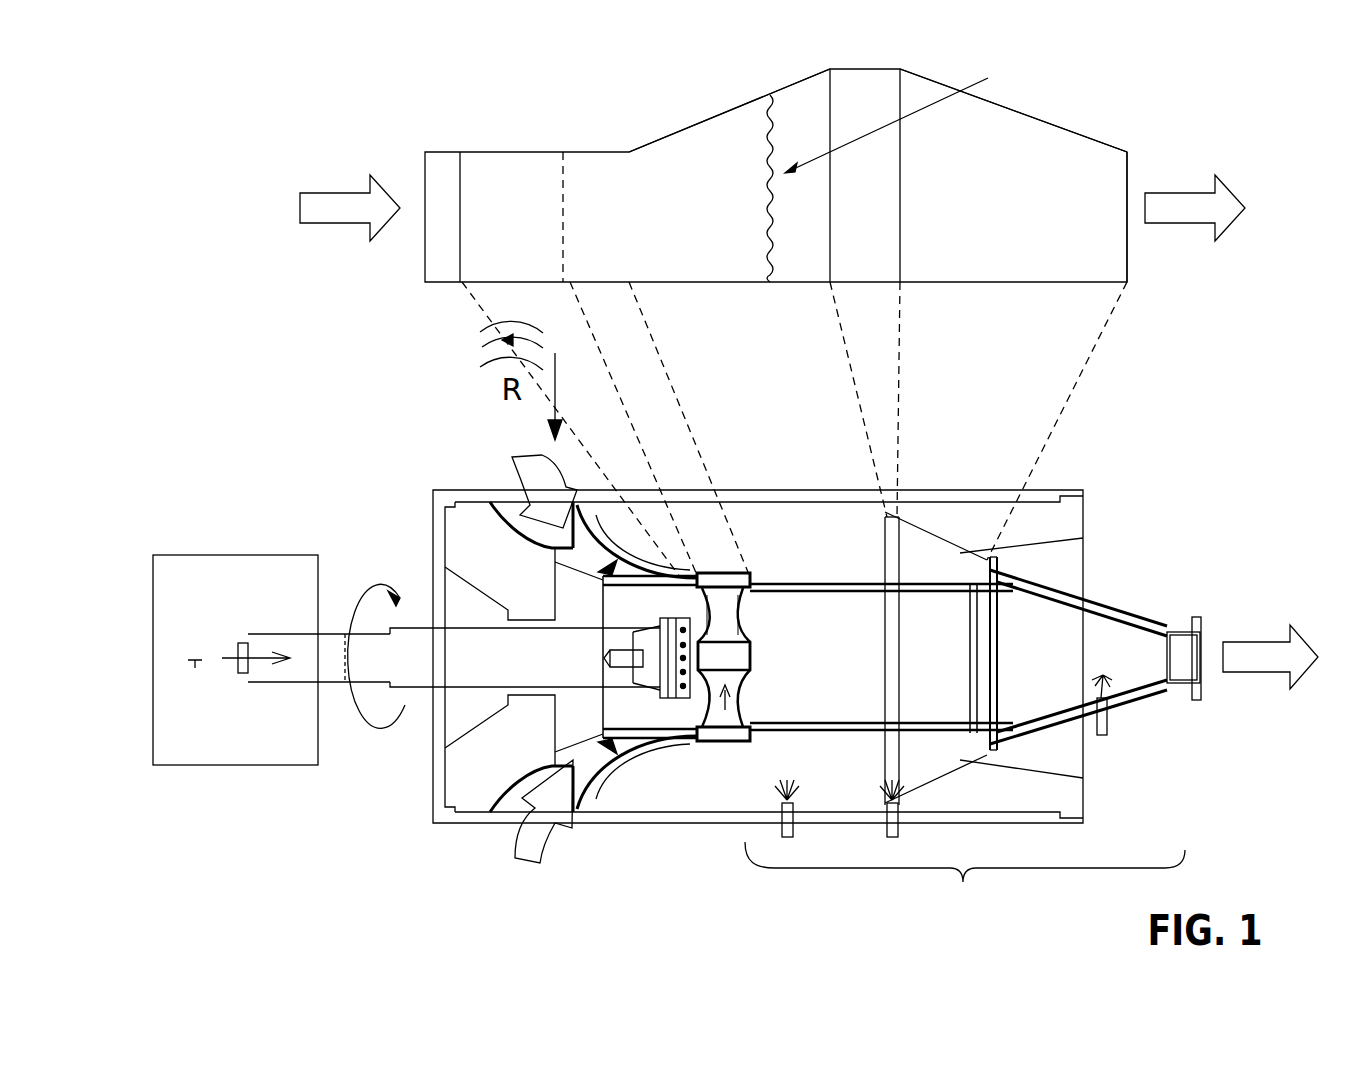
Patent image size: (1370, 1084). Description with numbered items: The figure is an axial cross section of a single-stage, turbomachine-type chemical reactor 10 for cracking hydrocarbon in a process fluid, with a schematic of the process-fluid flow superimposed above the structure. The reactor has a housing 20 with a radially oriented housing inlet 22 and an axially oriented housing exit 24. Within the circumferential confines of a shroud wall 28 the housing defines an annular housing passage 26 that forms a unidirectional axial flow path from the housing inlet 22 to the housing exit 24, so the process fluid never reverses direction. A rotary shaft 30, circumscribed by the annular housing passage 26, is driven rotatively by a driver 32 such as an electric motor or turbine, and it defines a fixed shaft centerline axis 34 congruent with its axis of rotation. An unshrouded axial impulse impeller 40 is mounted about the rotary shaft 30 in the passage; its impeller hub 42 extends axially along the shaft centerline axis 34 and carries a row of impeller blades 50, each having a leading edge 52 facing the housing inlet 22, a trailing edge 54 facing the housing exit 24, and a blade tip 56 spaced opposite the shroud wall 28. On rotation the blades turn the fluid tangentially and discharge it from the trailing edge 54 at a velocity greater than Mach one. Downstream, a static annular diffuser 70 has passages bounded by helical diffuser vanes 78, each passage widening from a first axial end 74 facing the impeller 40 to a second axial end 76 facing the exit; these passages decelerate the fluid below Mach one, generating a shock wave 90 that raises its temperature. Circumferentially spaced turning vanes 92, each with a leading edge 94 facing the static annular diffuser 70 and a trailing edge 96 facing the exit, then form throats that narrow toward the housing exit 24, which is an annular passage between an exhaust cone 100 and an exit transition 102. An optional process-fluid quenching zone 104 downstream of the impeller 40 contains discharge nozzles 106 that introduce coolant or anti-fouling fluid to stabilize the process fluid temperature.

The chemical reactor 10 is at (1212, 100).
The housing 20 is at (968, 488).
The housing inlet 22 is at (450, 265).
The housing exit 24 is at (1185, 238).
The annular housing passage 26 is at (698, 576).
The shroud wall 28 is at (600, 150).
The rotary shaft 30 is at (466, 668).
The driver 32 is at (245, 555).
The shaft centerline axis 34 is at (195, 670).
The axial impulse impeller 40 is at (515, 255).
The impeller hub 42 is at (740, 645).
The impeller blades 50 is at (535, 205).
The leading edge 52 is at (700, 575).
The trailing edge 54 is at (750, 577).
The blade tip 56 is at (760, 577).
The static annular diffuser 70 is at (730, 135).
The first axial end 74 is at (625, 250).
The second axial end 76 is at (833, 217).
The helical diffuser vanes 78 is at (858, 560).
The shock wave 90 is at (785, 127).
The turning vanes 92 is at (1058, 150).
The leading edge 94 is at (898, 140).
The trailing edge 96 is at (1128, 180).
The exhaust cone 100 is at (1107, 647).
The exit transition 102 is at (1160, 620).
The process-fluid quenching zone 104 is at (965, 886).
The discharge nozzles 106 is at (796, 836).